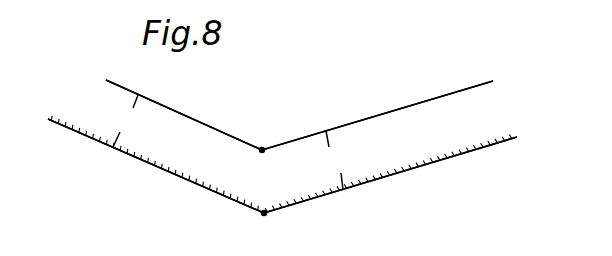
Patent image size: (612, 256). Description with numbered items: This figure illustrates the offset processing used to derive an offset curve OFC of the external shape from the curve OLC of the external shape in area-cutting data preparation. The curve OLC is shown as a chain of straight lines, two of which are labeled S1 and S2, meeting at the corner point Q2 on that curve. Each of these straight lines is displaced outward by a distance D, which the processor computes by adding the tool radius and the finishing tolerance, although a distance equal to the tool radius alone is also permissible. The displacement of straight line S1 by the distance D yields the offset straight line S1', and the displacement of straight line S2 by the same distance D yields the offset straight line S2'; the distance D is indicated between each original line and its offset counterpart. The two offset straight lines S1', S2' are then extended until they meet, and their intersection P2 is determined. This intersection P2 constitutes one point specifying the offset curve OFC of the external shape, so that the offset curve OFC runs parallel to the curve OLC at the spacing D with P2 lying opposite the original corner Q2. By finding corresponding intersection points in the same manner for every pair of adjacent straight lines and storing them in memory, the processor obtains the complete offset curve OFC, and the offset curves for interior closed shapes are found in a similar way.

The offset curve of the external shape OFC is at (225, 133).
The curve of the external shape OLC is at (210, 190).
The offset straight line S1' is at (184, 115).
The offset straight line S2' is at (377, 109).
The straight line S1 is at (156, 164).
The straight line S2 is at (390, 177).
The intersection P2 is at (269, 162).
The original corner point Q2 is at (271, 226).
The offset distance D is at (228, 142).